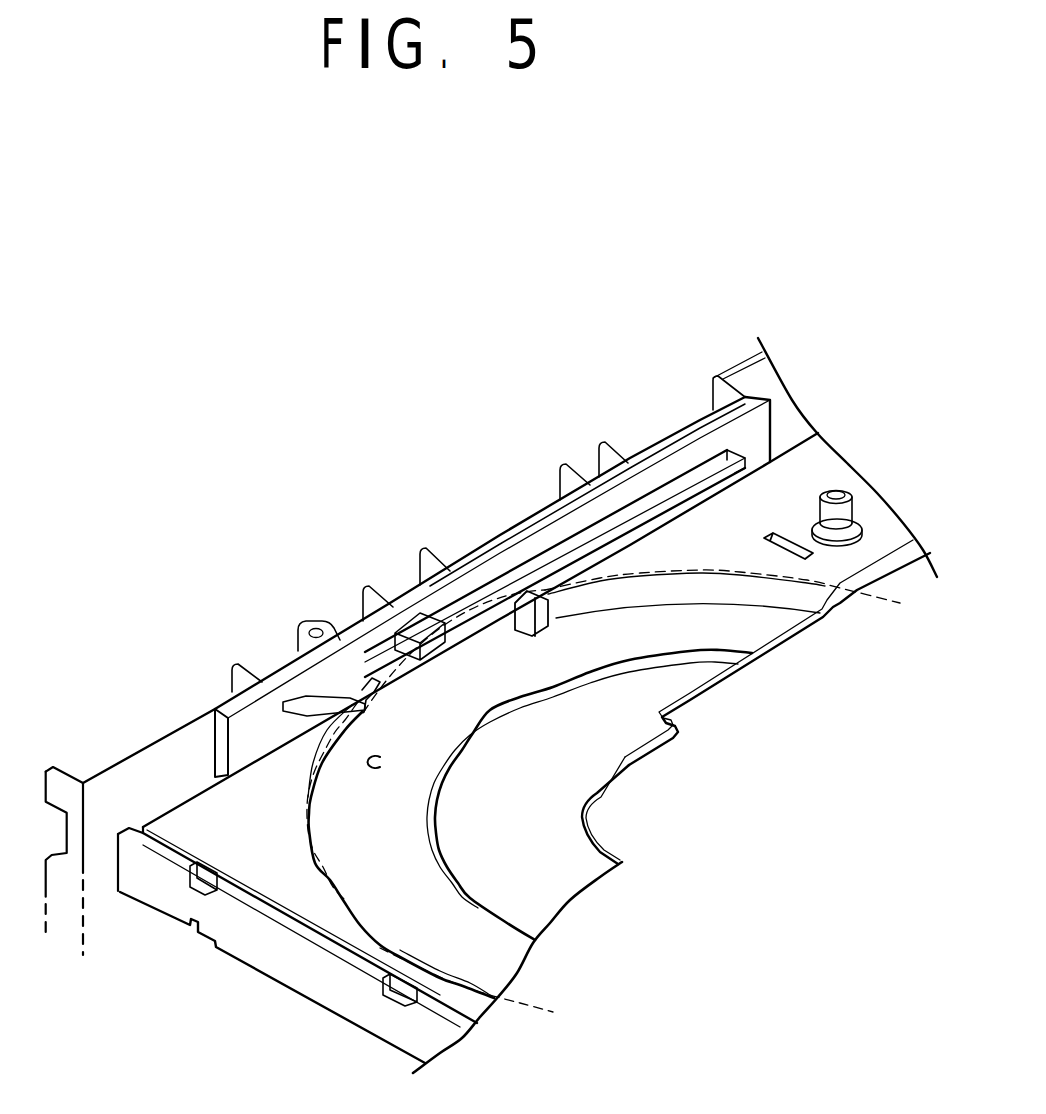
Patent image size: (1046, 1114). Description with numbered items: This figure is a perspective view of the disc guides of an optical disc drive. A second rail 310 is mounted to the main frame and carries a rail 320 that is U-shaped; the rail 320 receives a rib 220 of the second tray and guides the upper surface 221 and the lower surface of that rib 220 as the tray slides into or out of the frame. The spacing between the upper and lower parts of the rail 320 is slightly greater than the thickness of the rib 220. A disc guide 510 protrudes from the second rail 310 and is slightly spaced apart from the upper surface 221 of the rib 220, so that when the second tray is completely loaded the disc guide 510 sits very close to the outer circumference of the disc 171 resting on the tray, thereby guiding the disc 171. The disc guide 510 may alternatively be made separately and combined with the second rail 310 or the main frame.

The disc 171 is at (337, 838).
The second rail 310 is at (753, 437).
The rail 320 is at (677, 487).
The disc guide 510 is at (413, 612).
The upper surface 221 is at (545, 590).
The rib 220 is at (398, 687).